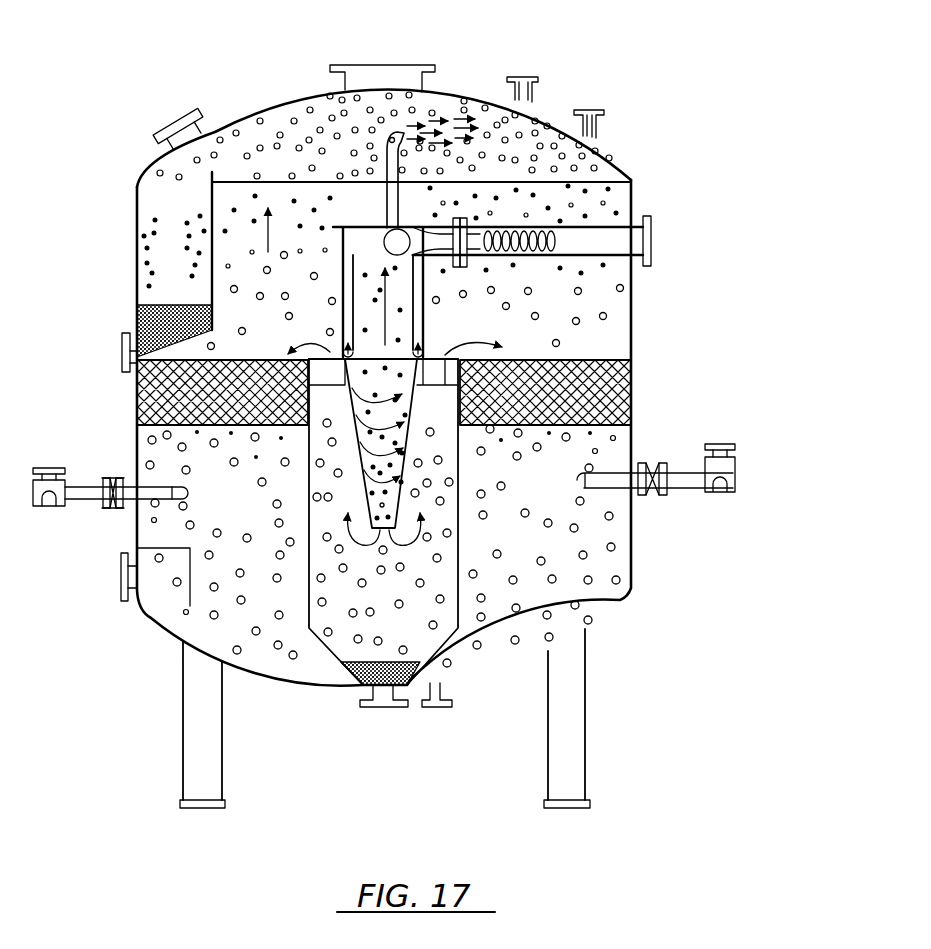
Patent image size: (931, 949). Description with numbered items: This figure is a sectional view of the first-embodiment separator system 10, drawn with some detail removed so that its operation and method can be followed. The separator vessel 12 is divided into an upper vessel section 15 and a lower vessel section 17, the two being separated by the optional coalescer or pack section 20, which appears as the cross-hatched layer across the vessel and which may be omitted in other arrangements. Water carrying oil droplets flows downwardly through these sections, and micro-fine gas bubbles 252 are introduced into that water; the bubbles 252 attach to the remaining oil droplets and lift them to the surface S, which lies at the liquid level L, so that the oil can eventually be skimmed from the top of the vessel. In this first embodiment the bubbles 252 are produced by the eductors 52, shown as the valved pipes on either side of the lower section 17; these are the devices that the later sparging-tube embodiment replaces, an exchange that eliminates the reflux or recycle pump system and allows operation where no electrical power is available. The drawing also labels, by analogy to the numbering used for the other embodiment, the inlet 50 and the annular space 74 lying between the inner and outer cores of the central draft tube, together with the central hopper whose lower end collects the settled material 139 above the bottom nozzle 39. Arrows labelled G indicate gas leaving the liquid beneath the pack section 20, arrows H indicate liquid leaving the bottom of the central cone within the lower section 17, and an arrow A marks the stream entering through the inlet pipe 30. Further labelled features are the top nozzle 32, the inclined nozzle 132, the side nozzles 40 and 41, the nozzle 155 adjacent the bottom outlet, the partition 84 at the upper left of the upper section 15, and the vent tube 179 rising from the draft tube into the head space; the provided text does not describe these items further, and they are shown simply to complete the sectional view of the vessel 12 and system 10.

The apparatus 10 is at (480, 50).
The vessel 12 is at (632, 315).
The liquid chamber 15 is at (247, 317).
The lower chamber 17 is at (226, 488).
The media layer 20 is at (137, 403).
The inlet pipe 30 is at (651, 222).
The top nozzle 32 is at (402, 64).
The bottom outlet nozzle 39 is at (386, 708).
The side nozzle 40 is at (130, 358).
The lower side nozzle 41 is at (121, 586).
The union fitting 50 is at (110, 508).
The eductor 52 is at (84, 486).
The draft tube 74 is at (347, 228).
The partition 84 is at (246, 163).
The inclined nozzle 132 is at (172, 122).
The settled solids 139 is at (356, 687).
The nozzle 155 is at (437, 708).
The gas vent tube 179 is at (387, 168).
The micro-fine gas bubbles 252 is at (258, 511).
The air flow A is at (556, 243).
The gas flow G is at (395, 335).
The liquid flow H is at (385, 452).
The liquid level L is at (636, 178).
The surface S is at (264, 182).